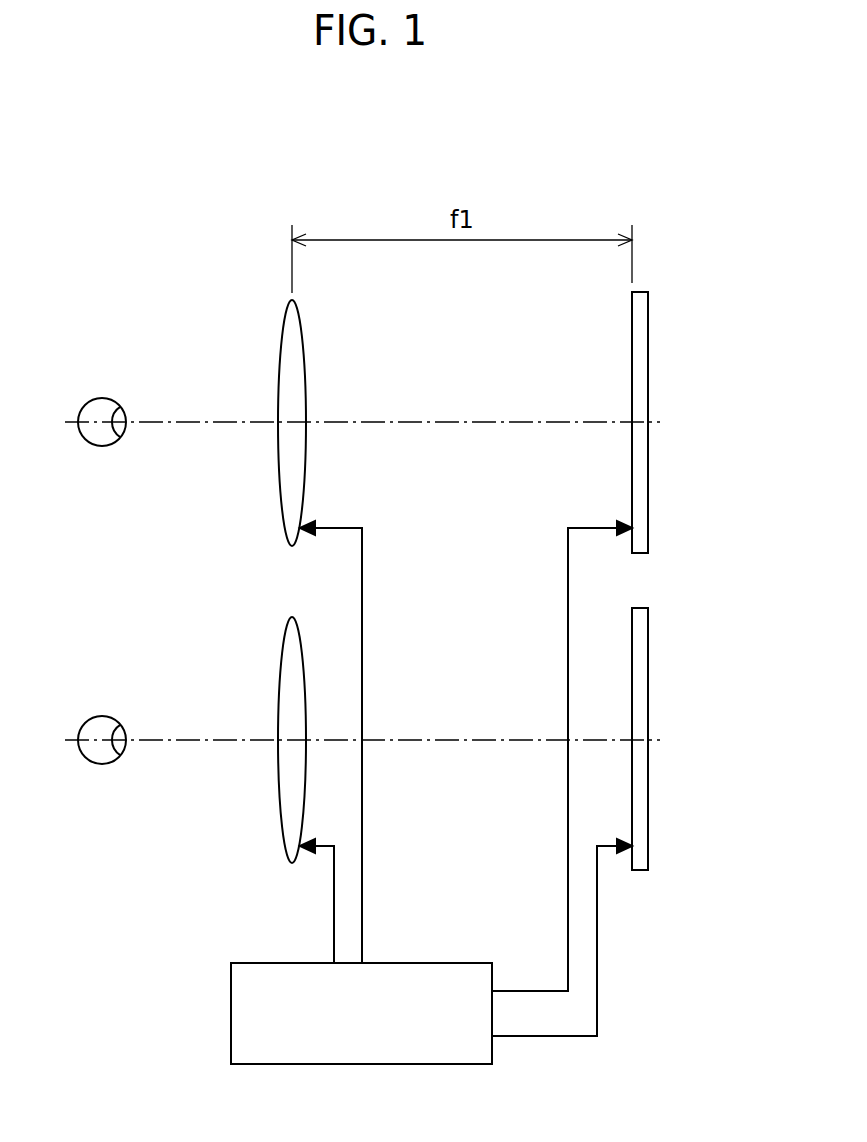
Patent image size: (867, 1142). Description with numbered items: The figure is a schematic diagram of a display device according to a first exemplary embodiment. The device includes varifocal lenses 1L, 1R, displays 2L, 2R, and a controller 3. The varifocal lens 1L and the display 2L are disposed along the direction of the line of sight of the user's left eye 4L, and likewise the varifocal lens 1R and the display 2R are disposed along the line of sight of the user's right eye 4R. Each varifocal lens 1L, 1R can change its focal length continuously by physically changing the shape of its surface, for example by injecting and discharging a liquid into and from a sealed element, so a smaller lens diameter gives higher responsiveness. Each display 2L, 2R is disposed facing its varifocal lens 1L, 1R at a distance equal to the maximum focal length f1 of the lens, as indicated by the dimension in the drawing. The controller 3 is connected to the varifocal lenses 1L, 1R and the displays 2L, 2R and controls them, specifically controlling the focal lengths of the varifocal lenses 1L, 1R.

The varifocal lens 1L is at (280, 333).
The varifocal lens 1R is at (283, 642).
The display 2L is at (649, 343).
The display 2R is at (649, 650).
The controller 3 is at (231, 1001).
The left eye 4L is at (105, 398).
The right eye 4R is at (100, 715).